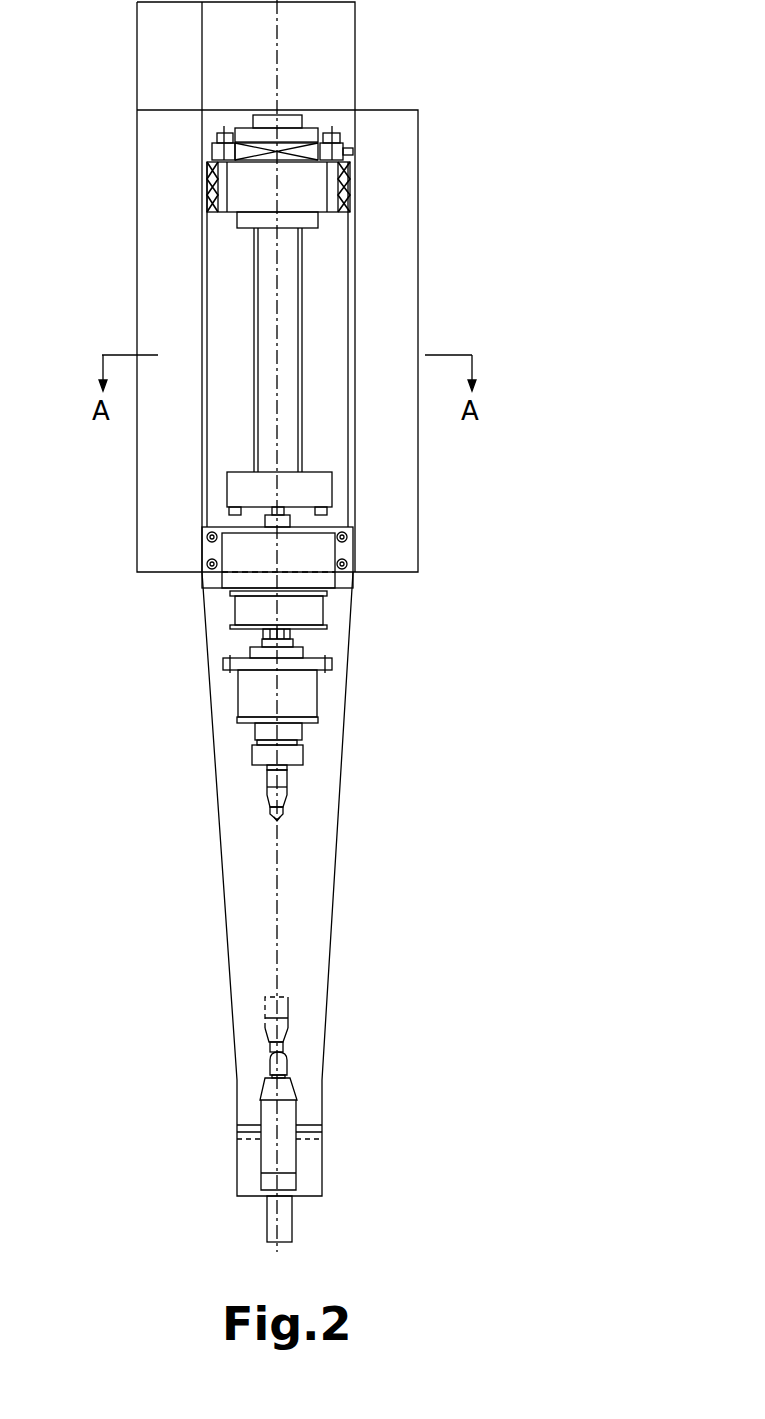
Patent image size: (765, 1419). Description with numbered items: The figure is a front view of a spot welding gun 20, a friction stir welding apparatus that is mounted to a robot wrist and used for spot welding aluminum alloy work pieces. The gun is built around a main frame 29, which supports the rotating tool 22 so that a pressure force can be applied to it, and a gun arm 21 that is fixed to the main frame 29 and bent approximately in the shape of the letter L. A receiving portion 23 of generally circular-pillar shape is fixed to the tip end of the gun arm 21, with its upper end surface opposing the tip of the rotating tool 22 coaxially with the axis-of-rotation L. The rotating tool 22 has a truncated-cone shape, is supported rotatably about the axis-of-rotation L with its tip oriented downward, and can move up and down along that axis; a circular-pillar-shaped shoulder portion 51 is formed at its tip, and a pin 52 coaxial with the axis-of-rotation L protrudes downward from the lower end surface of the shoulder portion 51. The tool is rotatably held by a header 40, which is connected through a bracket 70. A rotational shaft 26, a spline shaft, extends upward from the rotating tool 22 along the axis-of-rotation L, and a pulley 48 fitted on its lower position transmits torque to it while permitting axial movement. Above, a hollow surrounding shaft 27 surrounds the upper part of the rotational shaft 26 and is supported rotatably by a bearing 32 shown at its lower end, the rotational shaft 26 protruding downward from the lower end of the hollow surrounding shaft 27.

The spot welding gun 20 is at (346, 287).
The gun arm 21 is at (315, 870).
The rotating tool 22 is at (283, 778).
The receiving portion 23 is at (285, 1065).
The rotational shaft 26 is at (257, 637).
The hollow surrounding shaft 27 is at (268, 290).
The main frame 29 is at (405, 488).
The bearing 32 is at (238, 487).
The header 40 is at (305, 693).
The pulley 48 is at (247, 606).
The shoulder portion 51 is at (287, 812).
The pin 52 is at (277, 821).
The bracket 70 is at (338, 272).
The axis-of-rotation L is at (278, 947).